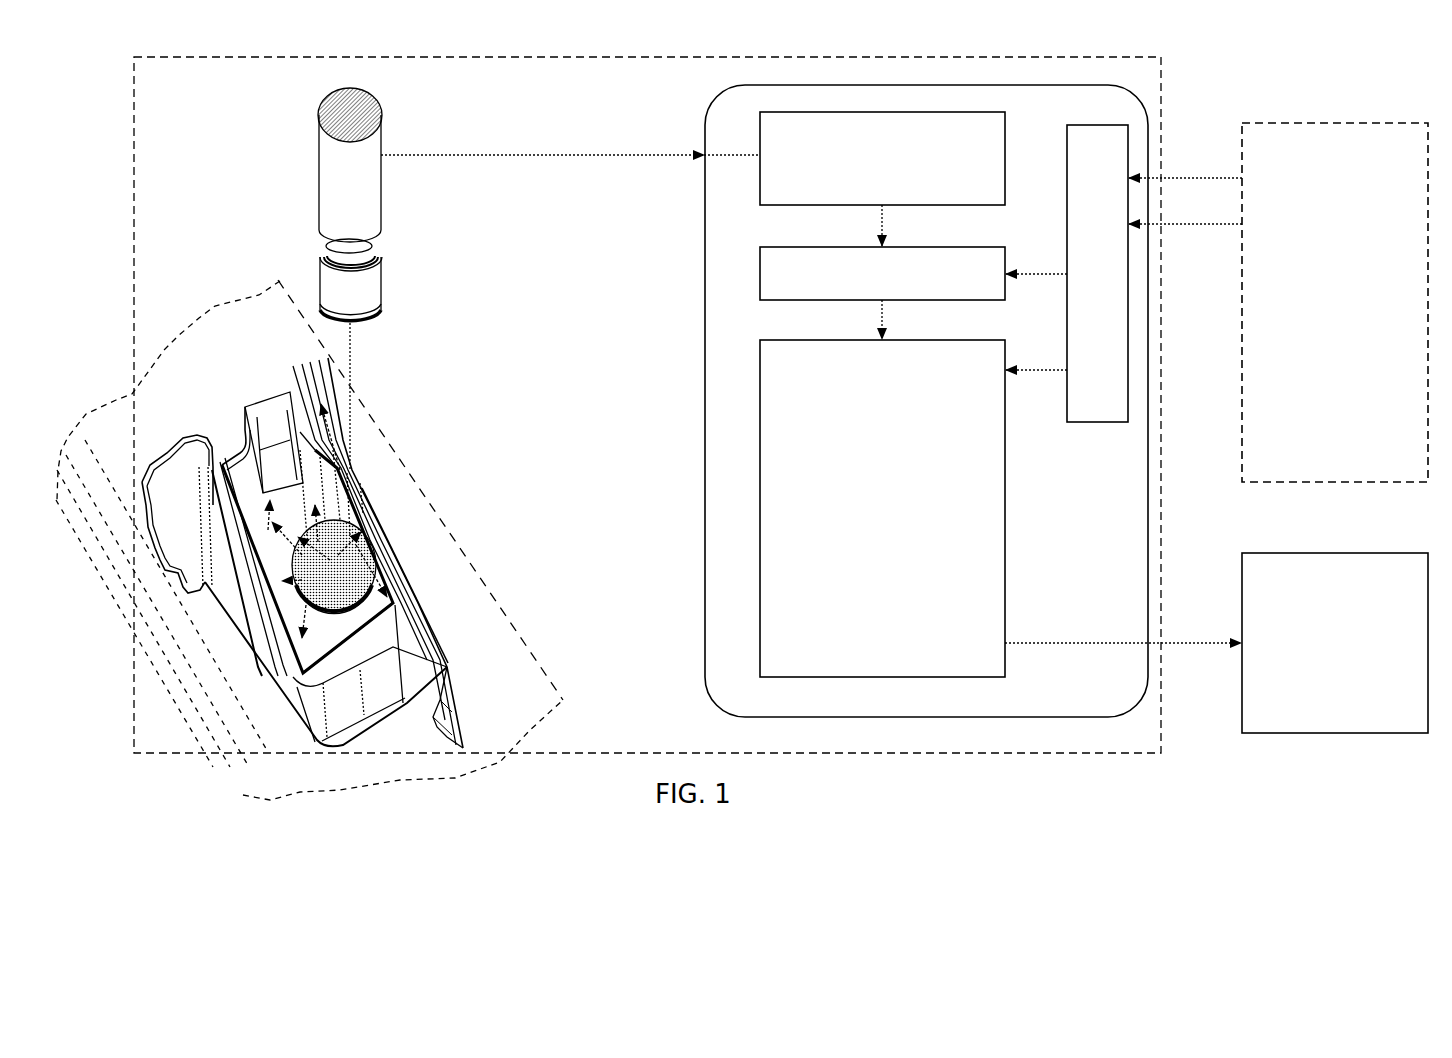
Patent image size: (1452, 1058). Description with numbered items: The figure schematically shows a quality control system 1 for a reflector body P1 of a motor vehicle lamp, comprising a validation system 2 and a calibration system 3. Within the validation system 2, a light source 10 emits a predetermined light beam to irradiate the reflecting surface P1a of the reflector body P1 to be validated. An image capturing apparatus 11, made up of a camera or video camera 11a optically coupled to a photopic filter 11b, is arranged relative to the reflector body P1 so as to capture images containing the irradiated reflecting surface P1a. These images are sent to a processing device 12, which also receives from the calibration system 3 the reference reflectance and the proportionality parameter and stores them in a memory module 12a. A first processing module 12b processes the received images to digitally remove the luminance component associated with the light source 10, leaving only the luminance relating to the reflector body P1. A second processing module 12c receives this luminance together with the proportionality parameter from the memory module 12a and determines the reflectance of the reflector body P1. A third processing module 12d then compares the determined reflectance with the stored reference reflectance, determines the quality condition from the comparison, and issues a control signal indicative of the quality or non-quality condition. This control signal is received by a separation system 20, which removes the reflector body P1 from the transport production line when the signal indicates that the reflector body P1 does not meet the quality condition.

The quality control system 1 is at (1236, 98).
The validation system 2 is at (134, 225).
The calibration system 3 is at (1335, 302).
The light source 10 is at (361, 532).
The image capturing apparatus 11 is at (444, 279).
The camera or video camera 11a is at (368, 178).
The photopic filter 11b is at (382, 318).
The processing device 12 is at (890, 401).
The memory module 12a is at (1097, 273).
The first processing module 12b is at (882, 158).
The second processing module 12c is at (882, 273).
The third processing module 12d is at (882, 508).
The separation system 20 is at (1335, 643).
The reflector body P1 is at (420, 577).
The reflecting surface P1a is at (340, 636).